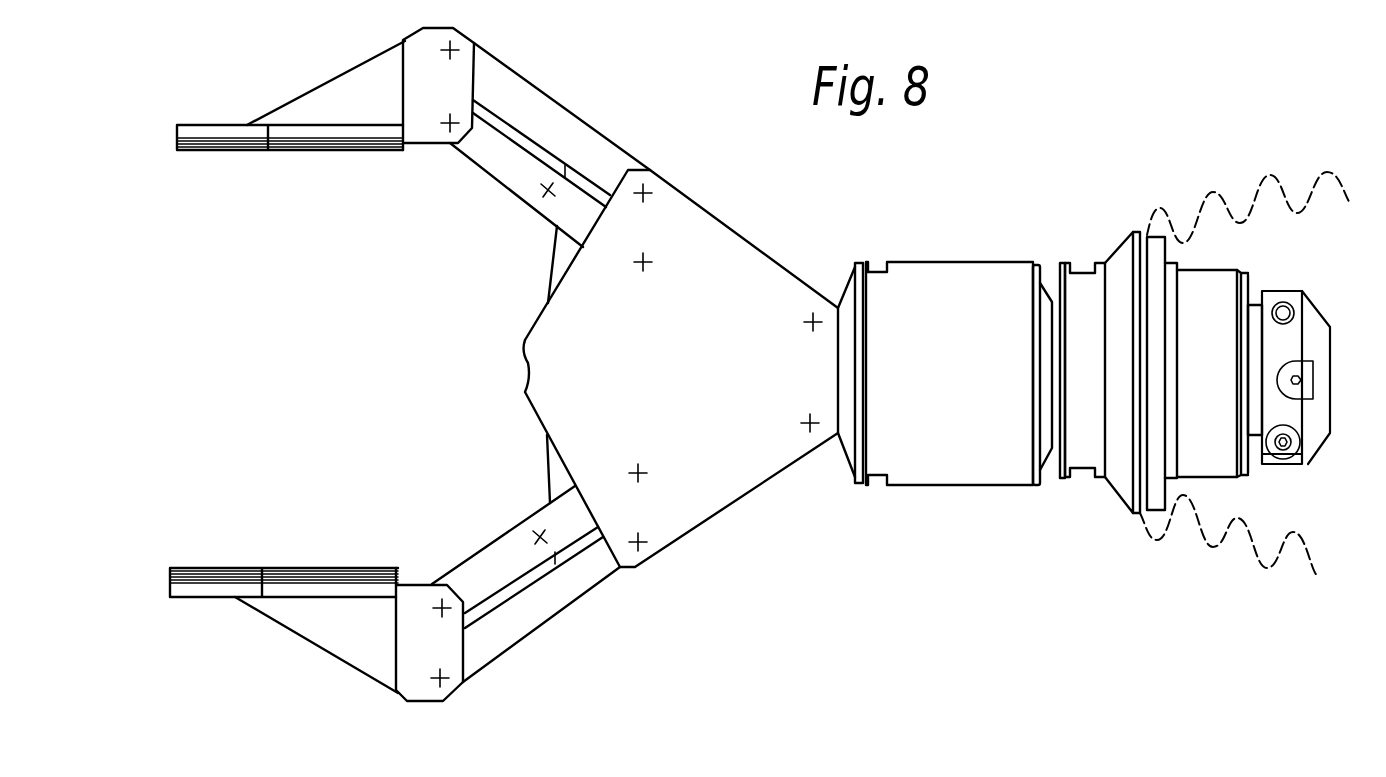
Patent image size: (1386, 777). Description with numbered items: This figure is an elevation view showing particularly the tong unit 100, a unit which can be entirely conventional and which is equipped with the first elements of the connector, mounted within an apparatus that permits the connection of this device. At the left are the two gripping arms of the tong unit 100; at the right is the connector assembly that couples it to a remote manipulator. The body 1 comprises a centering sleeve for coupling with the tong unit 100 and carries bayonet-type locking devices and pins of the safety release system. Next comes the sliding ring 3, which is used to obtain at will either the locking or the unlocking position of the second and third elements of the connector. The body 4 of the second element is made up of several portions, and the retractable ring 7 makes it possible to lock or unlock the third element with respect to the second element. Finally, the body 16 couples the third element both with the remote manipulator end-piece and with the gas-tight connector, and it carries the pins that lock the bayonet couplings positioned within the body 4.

The body 1 is at (842, 306).
The sliding ring 3 is at (933, 262).
The body 4 is at (1049, 462).
The retractable ring 7 is at (1093, 470).
The body 16 is at (1303, 317).
The tong unit 100 is at (600, 120).